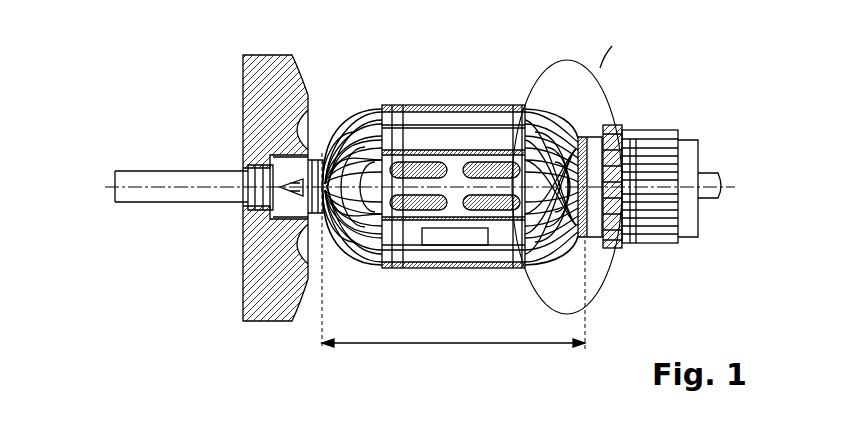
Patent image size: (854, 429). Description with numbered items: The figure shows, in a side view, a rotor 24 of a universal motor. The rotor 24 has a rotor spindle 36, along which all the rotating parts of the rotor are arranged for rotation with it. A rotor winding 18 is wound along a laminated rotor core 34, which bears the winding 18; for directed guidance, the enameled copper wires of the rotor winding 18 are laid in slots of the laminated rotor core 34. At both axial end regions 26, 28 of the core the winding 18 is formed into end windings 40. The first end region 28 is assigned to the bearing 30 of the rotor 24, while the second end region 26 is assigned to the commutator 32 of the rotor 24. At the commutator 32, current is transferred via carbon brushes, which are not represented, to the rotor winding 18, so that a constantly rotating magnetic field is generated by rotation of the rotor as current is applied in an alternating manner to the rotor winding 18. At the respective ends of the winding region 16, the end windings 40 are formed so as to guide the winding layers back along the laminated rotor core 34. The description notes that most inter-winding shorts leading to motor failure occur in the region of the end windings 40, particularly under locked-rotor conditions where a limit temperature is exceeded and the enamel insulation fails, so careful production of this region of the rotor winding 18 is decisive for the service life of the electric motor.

The winding region 16 is at (453, 251).
The rotor winding 18 is at (444, 186).
The rotor 24 is at (512, 79).
The second end region 26 is at (584, 240).
The first end region 28 is at (323, 153).
The bearing 30 is at (247, 162).
The commutator 32 is at (660, 128).
The laminated rotor core 34 is at (442, 113).
The rotor spindle 36 is at (148, 203).
The end windings 40 is at (499, 178).